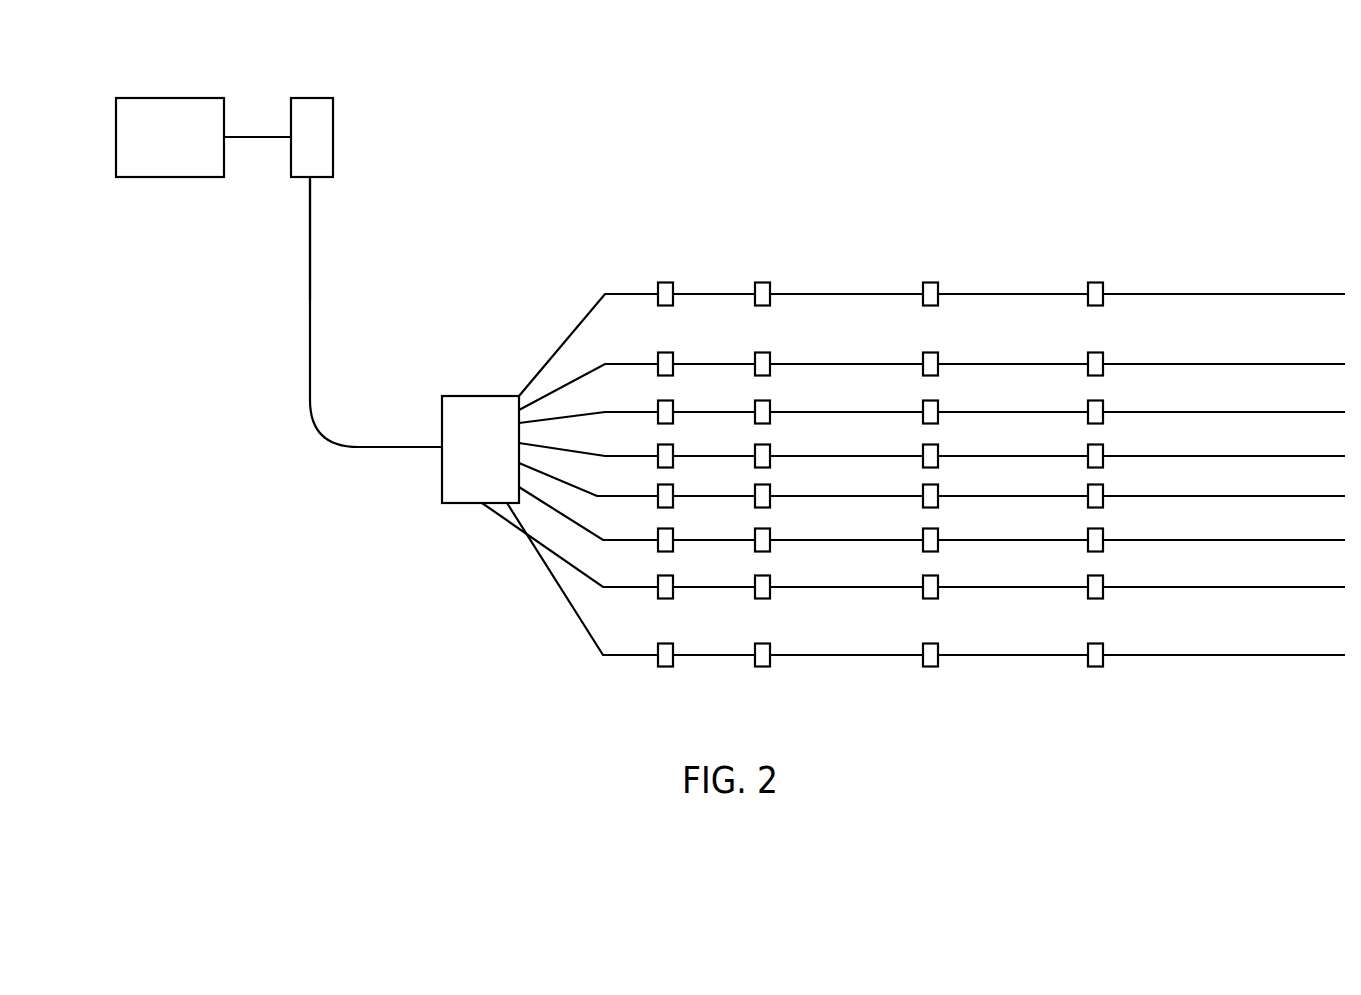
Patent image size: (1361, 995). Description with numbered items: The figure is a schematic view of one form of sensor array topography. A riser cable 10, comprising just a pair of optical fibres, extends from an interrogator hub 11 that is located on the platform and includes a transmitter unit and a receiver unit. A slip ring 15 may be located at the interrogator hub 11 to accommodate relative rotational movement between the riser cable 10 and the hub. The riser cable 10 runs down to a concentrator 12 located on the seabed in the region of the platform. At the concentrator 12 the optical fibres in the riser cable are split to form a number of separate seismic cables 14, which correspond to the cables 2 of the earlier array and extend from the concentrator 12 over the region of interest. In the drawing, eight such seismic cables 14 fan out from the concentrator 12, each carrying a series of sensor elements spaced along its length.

The interrogator hub 11 is at (168, 97).
The slip ring 15 is at (334, 115).
The riser cable 10 is at (310, 398).
The cables 2 is at (301, 295).
The concentrator 12 is at (463, 504).
The seismic cables 14 is at (858, 293).